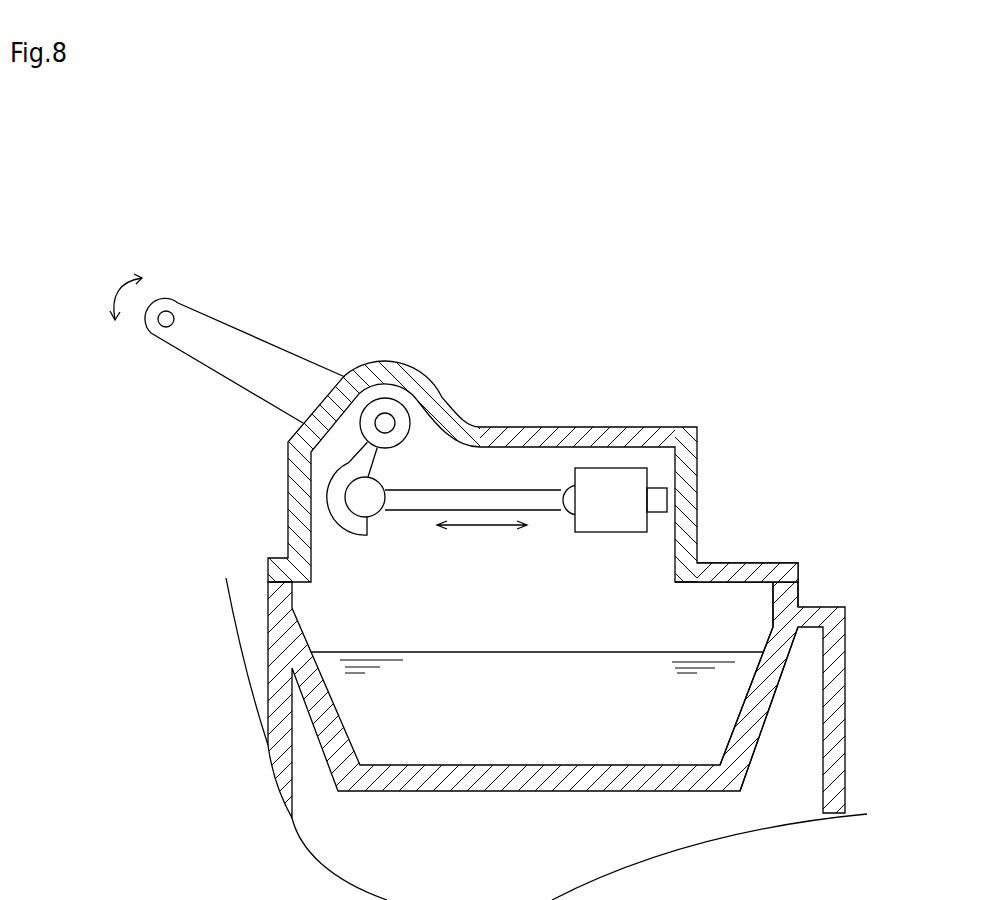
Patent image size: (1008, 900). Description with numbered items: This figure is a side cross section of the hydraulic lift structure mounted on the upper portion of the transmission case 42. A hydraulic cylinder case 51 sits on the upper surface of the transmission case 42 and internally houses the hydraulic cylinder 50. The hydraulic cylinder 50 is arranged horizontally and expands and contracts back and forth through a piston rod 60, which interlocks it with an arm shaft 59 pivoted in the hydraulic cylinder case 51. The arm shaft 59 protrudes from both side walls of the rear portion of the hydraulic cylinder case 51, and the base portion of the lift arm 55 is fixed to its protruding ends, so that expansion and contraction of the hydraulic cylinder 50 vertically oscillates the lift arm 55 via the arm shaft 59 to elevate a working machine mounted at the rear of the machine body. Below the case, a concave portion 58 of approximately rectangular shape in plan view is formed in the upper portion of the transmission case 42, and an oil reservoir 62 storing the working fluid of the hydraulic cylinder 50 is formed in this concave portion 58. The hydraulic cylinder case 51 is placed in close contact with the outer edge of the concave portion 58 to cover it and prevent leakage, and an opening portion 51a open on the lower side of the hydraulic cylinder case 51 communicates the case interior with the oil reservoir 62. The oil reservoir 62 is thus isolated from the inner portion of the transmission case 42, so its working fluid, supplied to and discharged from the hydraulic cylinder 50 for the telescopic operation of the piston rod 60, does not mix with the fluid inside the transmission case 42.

The transmission case 42 is at (845, 660).
The hydraulic cylinder 50 is at (497, 487).
The hydraulic cylinder case 51 is at (575, 427).
The opening portion 51a is at (697, 552).
The lift arm 55 is at (262, 337).
The concave portion 58 is at (775, 580).
The arm shaft 59 is at (388, 413).
The piston rod 60 is at (657, 488).
The oil reservoir 62 is at (530, 676).